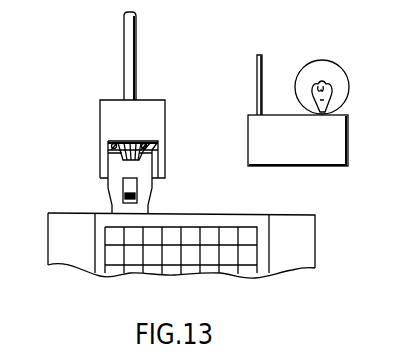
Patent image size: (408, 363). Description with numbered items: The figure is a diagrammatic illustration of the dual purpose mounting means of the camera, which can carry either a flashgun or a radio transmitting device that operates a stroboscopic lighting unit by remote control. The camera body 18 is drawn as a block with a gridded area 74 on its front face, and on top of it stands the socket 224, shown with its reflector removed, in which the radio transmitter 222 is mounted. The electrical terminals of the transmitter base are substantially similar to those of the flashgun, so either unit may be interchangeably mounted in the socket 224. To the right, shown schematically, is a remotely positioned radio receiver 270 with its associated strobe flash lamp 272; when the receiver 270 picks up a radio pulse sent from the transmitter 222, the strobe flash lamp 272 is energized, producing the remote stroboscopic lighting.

The base 18 is at (318, 253).
The grid array 74 is at (271, 251).
The radio transmitter 222 is at (167, 102).
The socket 224 is at (149, 183).
The radio receiver 270 is at (357, 107).
The strobe flash lamp 272 is at (344, 76).